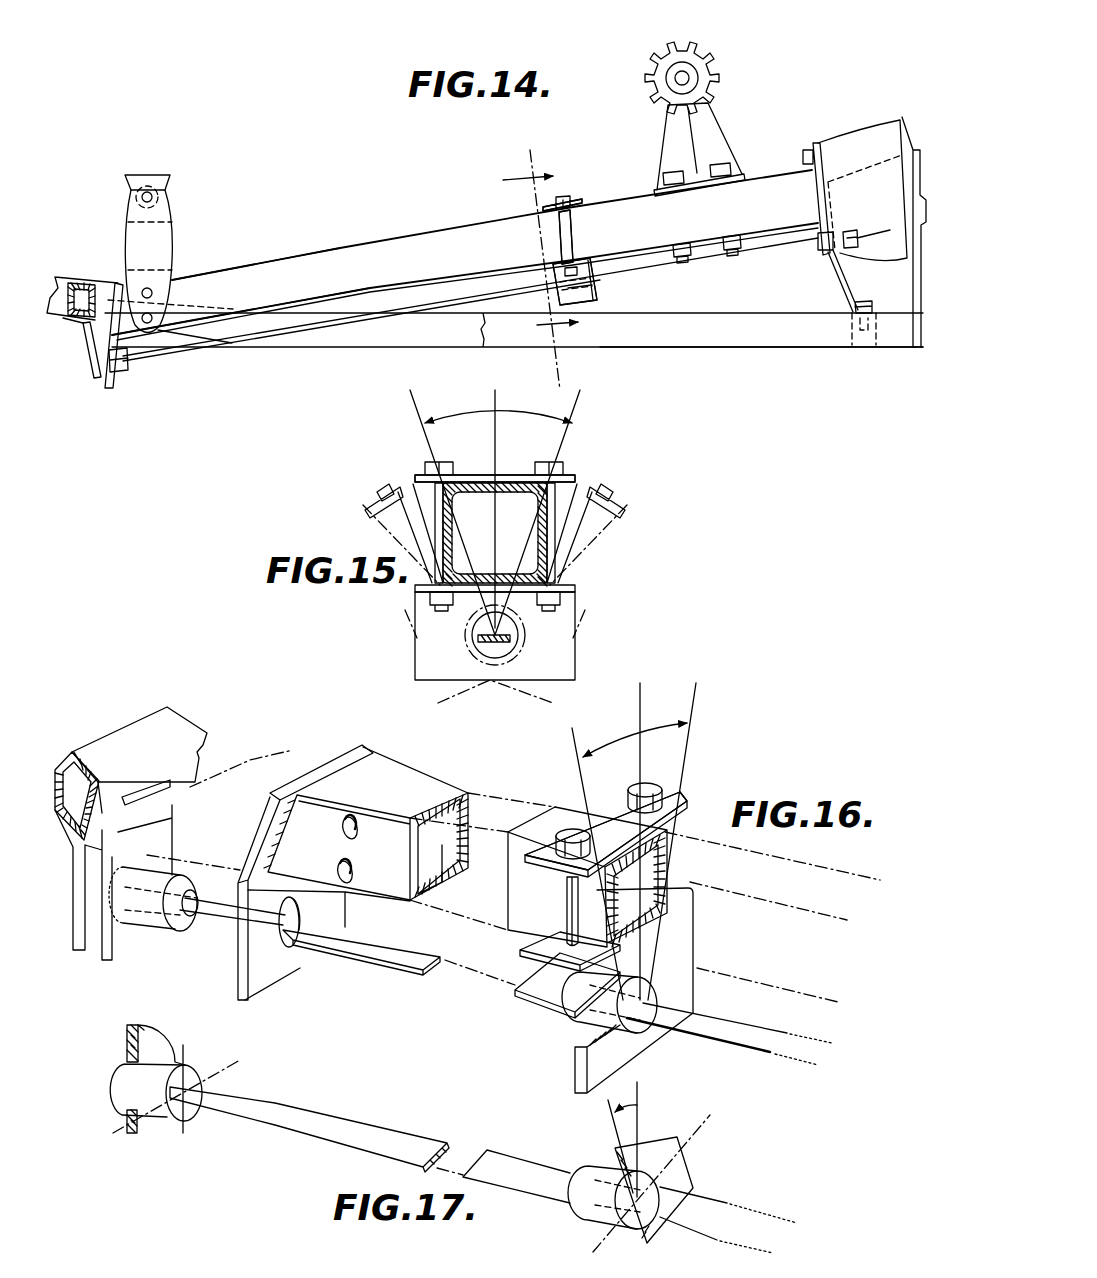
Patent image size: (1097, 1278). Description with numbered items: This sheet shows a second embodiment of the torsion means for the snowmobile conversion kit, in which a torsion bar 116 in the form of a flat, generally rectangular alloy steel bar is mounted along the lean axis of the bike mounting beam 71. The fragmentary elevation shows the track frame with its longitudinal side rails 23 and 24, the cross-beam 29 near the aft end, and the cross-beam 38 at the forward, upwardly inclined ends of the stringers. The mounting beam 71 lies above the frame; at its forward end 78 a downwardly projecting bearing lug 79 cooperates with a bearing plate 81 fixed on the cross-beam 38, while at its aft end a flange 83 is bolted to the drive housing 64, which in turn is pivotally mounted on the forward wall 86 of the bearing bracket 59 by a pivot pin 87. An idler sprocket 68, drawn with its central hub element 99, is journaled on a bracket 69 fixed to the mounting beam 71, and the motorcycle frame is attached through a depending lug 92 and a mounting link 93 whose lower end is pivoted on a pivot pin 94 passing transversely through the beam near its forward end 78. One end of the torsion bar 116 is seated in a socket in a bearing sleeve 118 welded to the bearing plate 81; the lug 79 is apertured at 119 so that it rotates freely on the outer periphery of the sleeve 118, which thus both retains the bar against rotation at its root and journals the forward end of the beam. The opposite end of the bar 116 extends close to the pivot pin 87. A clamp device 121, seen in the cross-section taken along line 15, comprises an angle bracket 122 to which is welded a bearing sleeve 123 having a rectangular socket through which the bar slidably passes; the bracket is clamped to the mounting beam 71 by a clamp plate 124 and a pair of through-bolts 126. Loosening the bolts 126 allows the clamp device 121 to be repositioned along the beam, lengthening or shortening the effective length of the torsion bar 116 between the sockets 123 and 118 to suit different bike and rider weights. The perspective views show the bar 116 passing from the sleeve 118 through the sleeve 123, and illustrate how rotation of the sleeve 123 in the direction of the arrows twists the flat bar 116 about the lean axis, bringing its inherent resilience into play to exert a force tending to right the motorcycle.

In FIG. 14, the section line 15 is at (541, 261).
In FIG. 14, the longitudinal side rail 23 is at (396, 335).
In FIG. 14, the longitudinal side rail 24 is at (748, 340).
In FIG. 14, the cross-beam 29 is at (852, 333).
In FIG. 14, the cross-beam 38 is at (88, 283).
In FIG. 16, the cross-beam 38 is at (180, 718).
In FIG. 14, the bearing bracket 59 is at (915, 150).
In FIG. 14, the drive housing 64 is at (870, 120).
In FIG. 14, the idler sprocket 68 is at (700, 45).
In FIG. 14, the bracket 69 is at (705, 128).
In FIG. 14, the bike mounting beam 71 is at (445, 225).
In FIG. 15, the bike mounting beam 71 is at (552, 553).
In FIG. 16, the bike mounting beam 71 is at (541, 812).
In FIG. 14, the forward end of mounting beam 78 is at (318, 262).
In FIG. 16, the forward end of mounting beam 78 is at (395, 783).
In FIG. 14, the bearing lug 79 is at (109, 388).
In FIG. 16, the bearing lug 79 is at (283, 973).
In FIG. 14, the bearing plate 81 is at (96, 378).
In FIG. 16, the bearing plate 81 is at (75, 925).
In FIG. 17, the bearing plate 81 is at (142, 1128).
In FIG. 14, the flange 83 is at (814, 148).
In FIG. 14, the forward wall of bearing bracket 86 is at (845, 282).
In FIG. 14, the pivot pin 87 is at (856, 233).
In FIG. 14, the depending lug 92 is at (160, 195).
In FIG. 14, the mounting link 93 is at (162, 238).
In FIG. 14, the pivot pin 94 is at (153, 317).
In FIG. 14, the sprocket shaft 99 is at (687, 78).
In FIG. 14, the torsion bar 116 is at (343, 320).
In FIG. 15, the torsion bar 116 is at (510, 640).
In FIG. 16, the torsion bar 116 is at (410, 970).
In FIG. 17, the torsion bar 116 is at (365, 1125).
In FIG. 14, the bearing sleeve 118 is at (128, 368).
In FIG. 16, the bearing sleeve 118 is at (150, 925).
In FIG. 17, the bearing sleeve 118 is at (162, 1125).
In FIG. 16, the aperture 119 is at (300, 950).
In FIG. 14, the clamp device 121 is at (585, 202).
In FIG. 15, the clamp device 121 is at (578, 471).
In FIG. 16, the clamp device 121 is at (688, 795).
In FIG. 14, the angle bracket 122 is at (596, 290).
In FIG. 15, the angle bracket 122 is at (427, 660).
In FIG. 16, the angle bracket 122 is at (682, 950).
In FIG. 17, the angle bracket 122 is at (683, 1175).
In FIG. 14, the bearing sleeve 123 is at (590, 303).
In FIG. 15, the bearing sleeve 123 is at (505, 650).
In FIG. 16, the bearing sleeve 123 is at (588, 1024).
In FIG. 17, the bearing sleeve 123 is at (580, 1213).
In FIG. 14, the clamp plate 124 is at (578, 206).
In FIG. 15, the clamp plate 124 is at (577, 478).
In FIG. 16, the clamp plate 124 is at (525, 876).
In FIG. 14, the through-bolts 126 is at (572, 240).
In FIG. 15, the through-bolts 126 is at (557, 525).
In FIG. 16, the through-bolts 126 is at (573, 898).